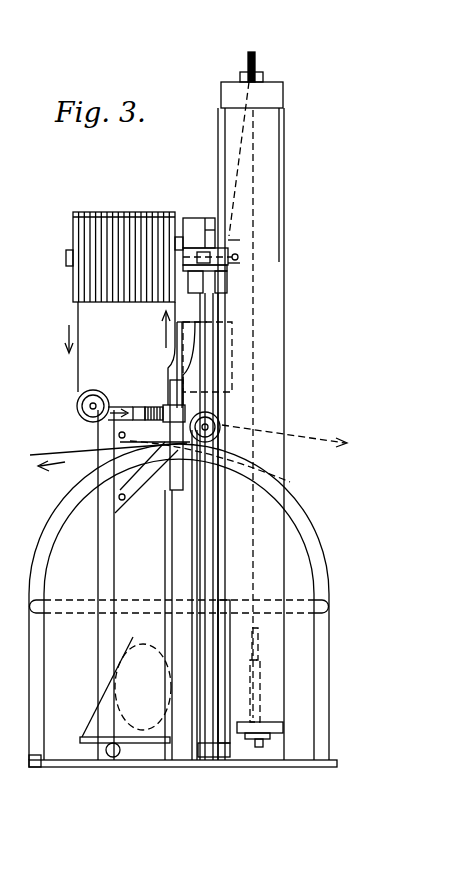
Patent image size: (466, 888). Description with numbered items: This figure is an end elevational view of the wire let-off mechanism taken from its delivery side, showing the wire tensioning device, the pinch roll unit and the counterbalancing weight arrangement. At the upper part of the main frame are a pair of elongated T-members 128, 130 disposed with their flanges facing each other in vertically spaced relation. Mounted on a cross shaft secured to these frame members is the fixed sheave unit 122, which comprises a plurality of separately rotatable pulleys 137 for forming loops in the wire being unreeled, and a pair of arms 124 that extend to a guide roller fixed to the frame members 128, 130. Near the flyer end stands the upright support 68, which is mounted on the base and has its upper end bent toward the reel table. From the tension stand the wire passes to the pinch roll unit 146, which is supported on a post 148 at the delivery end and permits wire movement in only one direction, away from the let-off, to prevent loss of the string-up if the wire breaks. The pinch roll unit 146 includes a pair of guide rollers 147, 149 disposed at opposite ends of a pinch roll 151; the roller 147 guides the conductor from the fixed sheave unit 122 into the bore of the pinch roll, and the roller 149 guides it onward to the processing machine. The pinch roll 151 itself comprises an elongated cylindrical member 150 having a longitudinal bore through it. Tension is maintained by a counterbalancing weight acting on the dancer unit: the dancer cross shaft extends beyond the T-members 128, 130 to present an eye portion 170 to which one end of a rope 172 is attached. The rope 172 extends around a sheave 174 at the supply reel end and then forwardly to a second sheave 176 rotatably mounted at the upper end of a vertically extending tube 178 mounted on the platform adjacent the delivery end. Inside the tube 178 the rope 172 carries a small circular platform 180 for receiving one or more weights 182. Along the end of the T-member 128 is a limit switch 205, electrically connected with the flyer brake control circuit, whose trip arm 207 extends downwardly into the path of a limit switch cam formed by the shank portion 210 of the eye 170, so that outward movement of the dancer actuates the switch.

The upright support 68 is at (172, 540).
The fixed sheave unit 122 is at (70, 232).
The arms 124 is at (66, 258).
The T-member 128 is at (208, 222).
The T-member 130 is at (220, 275).
The pulleys 137 is at (155, 305).
The pinch roll unit 146 is at (80, 420).
The guide roller 147 is at (80, 398).
The post 148 is at (100, 548).
The guide roller 149 is at (215, 420).
The elongated cylindrical member 150 is at (160, 410).
The pinch roll 151 is at (178, 410).
The eye portion 170 is at (238, 258).
The rope 172 is at (255, 136).
The sheave 174 is at (225, 222).
The second sheave 176 is at (258, 58).
The tube 178 is at (273, 353).
The circular platform 180 is at (268, 748).
The weights 182 is at (282, 718).
The limit switch 205 is at (212, 238).
The trip arm 207 is at (232, 240).
The shank portion 210 is at (238, 263).